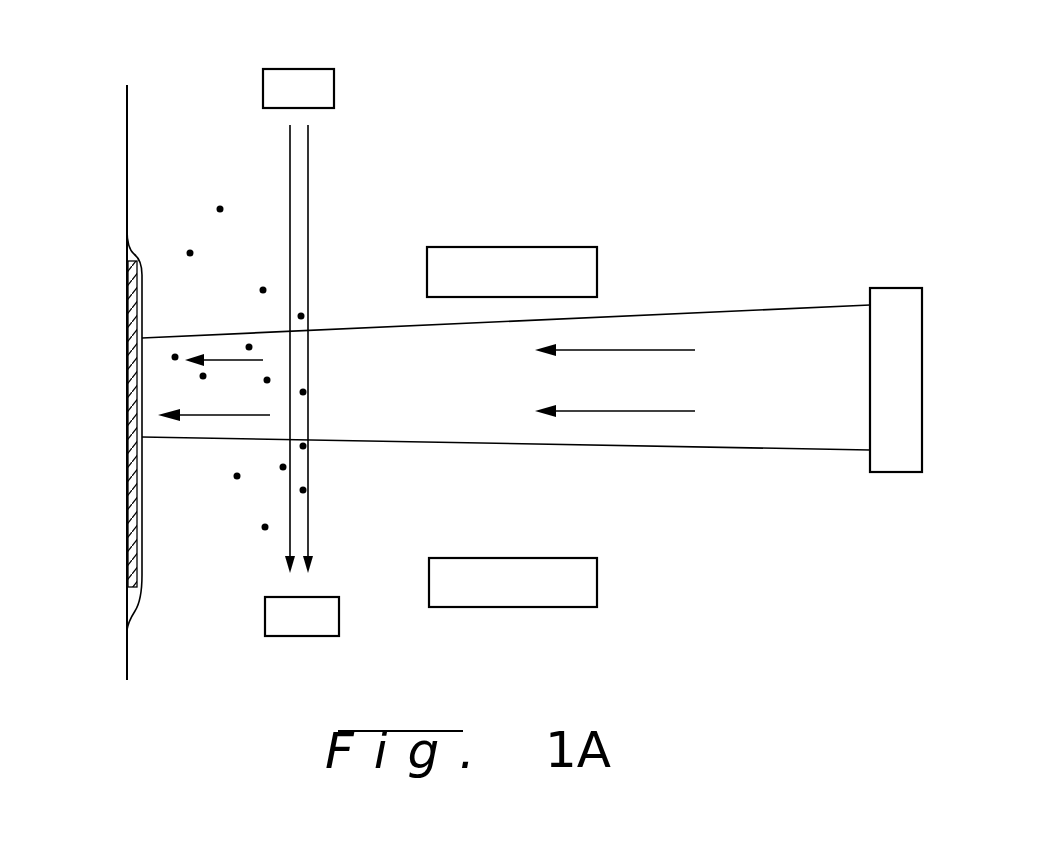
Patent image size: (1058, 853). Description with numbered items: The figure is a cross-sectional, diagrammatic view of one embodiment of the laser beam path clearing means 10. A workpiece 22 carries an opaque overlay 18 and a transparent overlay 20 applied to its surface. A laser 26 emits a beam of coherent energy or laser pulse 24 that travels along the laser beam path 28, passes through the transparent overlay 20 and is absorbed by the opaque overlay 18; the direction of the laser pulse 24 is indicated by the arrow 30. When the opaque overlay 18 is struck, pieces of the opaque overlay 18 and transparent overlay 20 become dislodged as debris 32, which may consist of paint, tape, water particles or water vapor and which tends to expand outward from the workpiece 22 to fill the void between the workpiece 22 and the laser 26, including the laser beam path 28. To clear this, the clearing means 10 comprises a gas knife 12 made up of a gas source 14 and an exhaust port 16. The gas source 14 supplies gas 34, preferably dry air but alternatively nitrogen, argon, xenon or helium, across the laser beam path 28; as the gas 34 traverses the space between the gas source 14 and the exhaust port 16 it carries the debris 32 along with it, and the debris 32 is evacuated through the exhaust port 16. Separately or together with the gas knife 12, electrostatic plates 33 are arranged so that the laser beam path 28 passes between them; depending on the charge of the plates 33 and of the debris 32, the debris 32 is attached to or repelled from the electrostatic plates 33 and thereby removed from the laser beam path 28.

The laser beam path clearing means 10 is at (378, 144).
The gas knife 12 is at (261, 118).
The gas source 14 is at (295, 69).
The exhaust port 16 is at (265, 620).
The opaque overlay 18 is at (128, 362).
The transparent overlay 20 is at (131, 250).
The workpiece 22 is at (127, 157).
The laser pulse 24 is at (226, 334).
The laser 26 is at (897, 472).
The laser beam path 28 is at (757, 442).
The arrow 30 is at (620, 411).
The debris 32 is at (220, 209).
The electrostatic plates 33 is at (597, 260).
The gas 34 is at (310, 267).